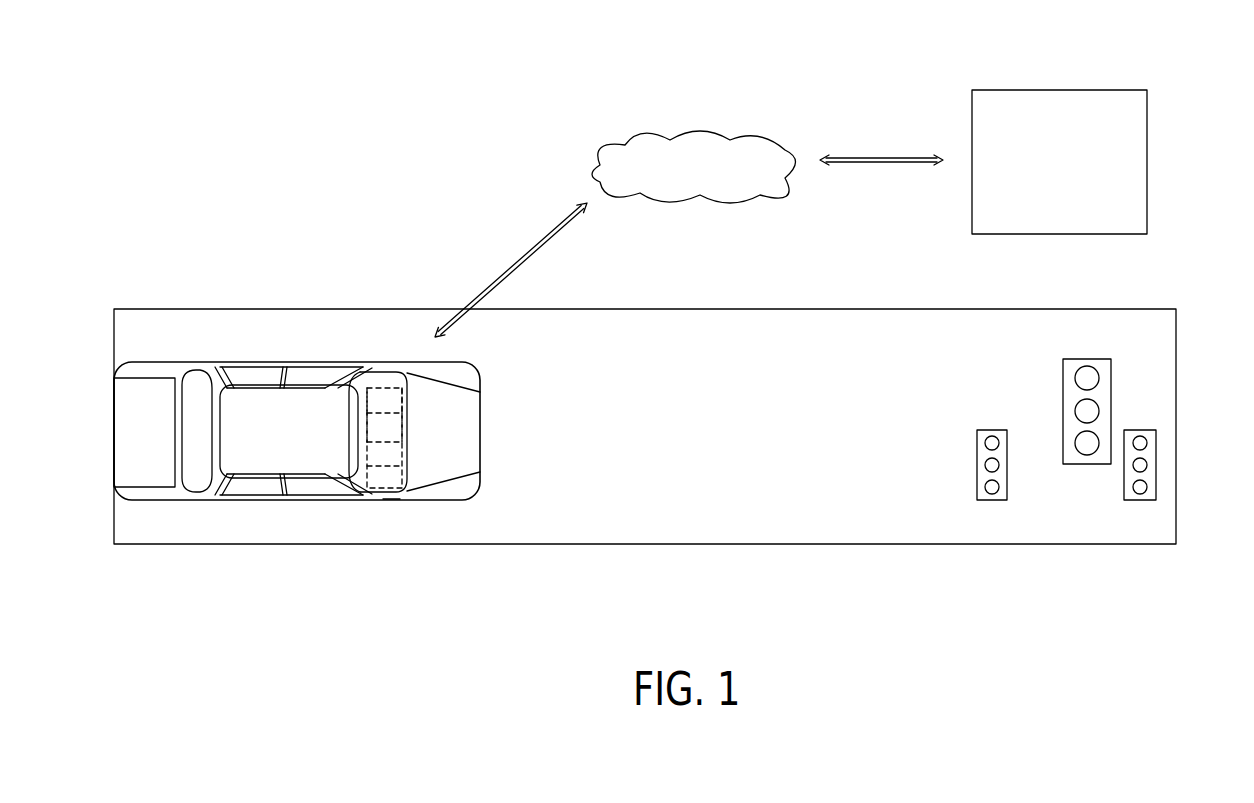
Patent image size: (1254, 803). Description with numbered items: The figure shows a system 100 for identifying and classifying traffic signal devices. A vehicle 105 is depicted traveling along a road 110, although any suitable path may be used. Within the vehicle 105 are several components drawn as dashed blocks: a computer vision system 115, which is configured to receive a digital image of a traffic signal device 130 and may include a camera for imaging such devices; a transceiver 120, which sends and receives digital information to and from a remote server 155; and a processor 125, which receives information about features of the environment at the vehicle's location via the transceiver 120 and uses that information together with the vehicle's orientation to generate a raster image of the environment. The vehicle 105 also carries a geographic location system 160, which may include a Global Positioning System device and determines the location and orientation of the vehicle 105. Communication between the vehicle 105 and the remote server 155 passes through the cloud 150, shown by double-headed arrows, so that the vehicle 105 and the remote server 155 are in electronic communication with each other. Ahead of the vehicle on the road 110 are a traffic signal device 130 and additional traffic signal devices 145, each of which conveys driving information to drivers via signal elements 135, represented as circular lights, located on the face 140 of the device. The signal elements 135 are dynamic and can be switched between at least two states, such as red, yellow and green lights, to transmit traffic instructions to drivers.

The system 100 is at (296, 180).
The vehicle 105 is at (197, 368).
The road 110 is at (295, 530).
The computer vision system 115 is at (398, 455).
The transceiver 120 is at (405, 438).
The processor 125 is at (405, 403).
The traffic signal device 130 is at (1063, 375).
The signal element 135 is at (993, 490).
The face 140 is at (1072, 425).
The traffic signal device 145 is at (977, 457).
The cloud 150 is at (595, 170).
The remote server 155 is at (1052, 102).
The geographic location system 160 is at (390, 491).